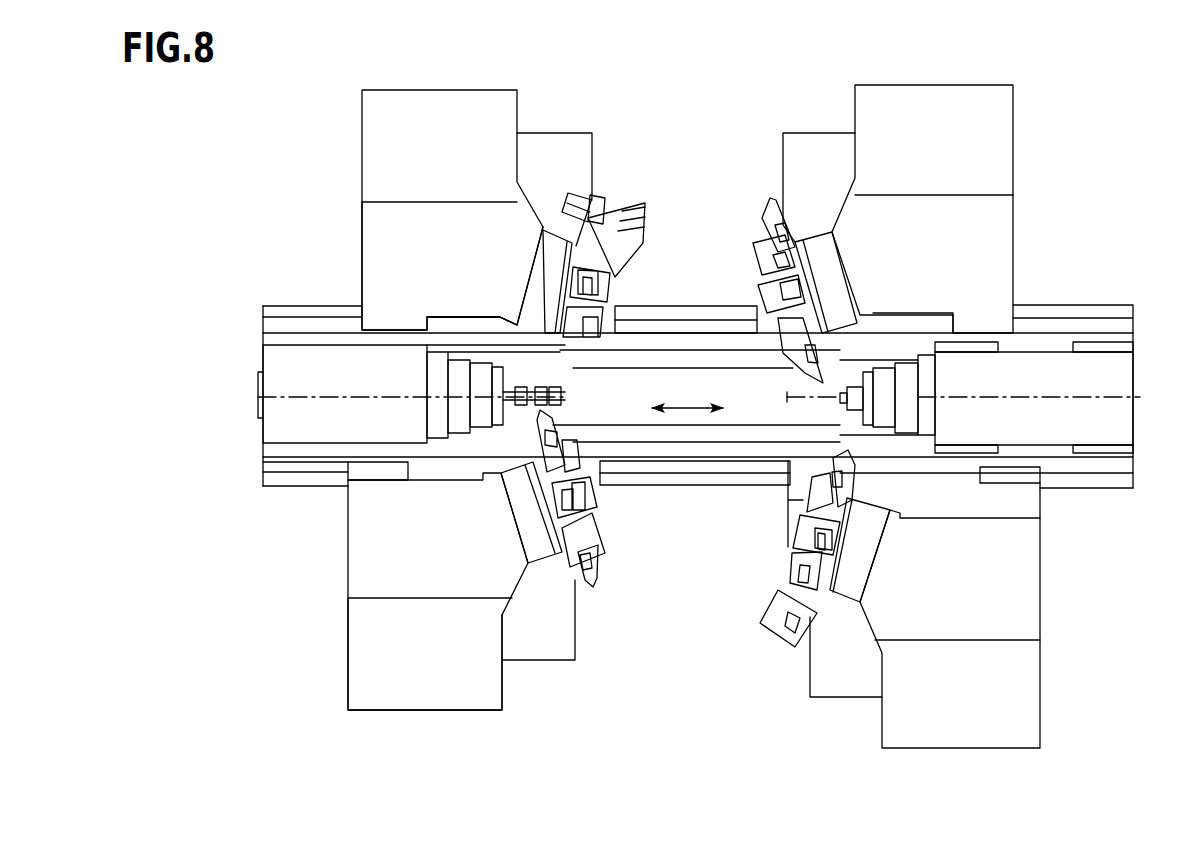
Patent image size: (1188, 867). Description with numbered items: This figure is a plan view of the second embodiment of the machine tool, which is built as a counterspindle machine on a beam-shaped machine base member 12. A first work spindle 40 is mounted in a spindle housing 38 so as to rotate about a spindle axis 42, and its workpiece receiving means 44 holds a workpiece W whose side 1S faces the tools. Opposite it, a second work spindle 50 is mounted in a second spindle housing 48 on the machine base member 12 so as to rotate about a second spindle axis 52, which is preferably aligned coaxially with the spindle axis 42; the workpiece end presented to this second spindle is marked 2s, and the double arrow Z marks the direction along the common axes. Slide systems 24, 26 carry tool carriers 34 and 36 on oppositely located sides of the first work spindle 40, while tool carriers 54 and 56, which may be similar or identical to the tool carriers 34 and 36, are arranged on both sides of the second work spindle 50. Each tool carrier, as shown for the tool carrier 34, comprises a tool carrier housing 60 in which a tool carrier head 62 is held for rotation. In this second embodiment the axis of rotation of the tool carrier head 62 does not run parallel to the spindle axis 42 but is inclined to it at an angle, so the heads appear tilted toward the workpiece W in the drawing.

The machine base member 12 is at (677, 290).
The first upper slide unit 24 is at (388, 146).
The slide system 26 is at (435, 683).
The tool carrier 34 is at (378, 248).
The tool carrier 36 is at (374, 548).
The spindle housing 38 is at (290, 437).
The work spindle 40 is at (455, 440).
The spindle axis 42 is at (315, 385).
The workpiece receiving means 44 is at (495, 460).
The second spindle housing 48 is at (1092, 376).
The second work spindle 50 is at (918, 440).
The second spindle axis 52 is at (793, 400).
The tool carrier 54 is at (1002, 593).
The tool carrier 56 is at (982, 206).
The tool carrier housing 60 is at (496, 100).
The tool carrier head 62 is at (620, 226).
The side of workpiece 1S is at (548, 380).
The second spindle 2s is at (834, 385).
The workpiece W is at (520, 388).
The Z axis direction Z is at (687, 390).